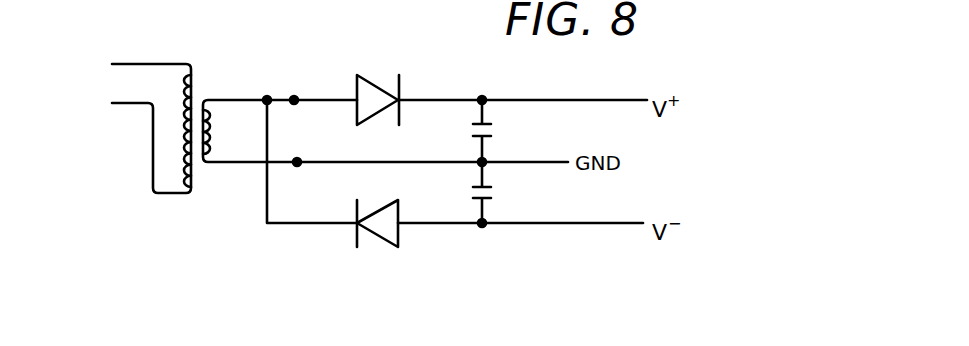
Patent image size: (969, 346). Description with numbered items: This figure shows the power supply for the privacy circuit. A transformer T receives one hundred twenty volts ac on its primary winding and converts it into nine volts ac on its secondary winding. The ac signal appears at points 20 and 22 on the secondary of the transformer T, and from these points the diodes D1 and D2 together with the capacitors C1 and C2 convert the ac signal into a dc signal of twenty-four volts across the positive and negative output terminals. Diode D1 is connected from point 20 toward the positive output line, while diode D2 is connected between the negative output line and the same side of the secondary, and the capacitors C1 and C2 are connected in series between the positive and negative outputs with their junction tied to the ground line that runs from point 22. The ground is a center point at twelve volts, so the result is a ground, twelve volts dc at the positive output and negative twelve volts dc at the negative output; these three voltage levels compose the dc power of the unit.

The point 20 is at (294, 100).
The point 22 is at (306, 142).
The transformer T is at (187, 145).
The diode D1 is at (362, 104).
The diode D2 is at (397, 239).
The capacitor C1 is at (501, 129).
The capacitor C2 is at (502, 192).